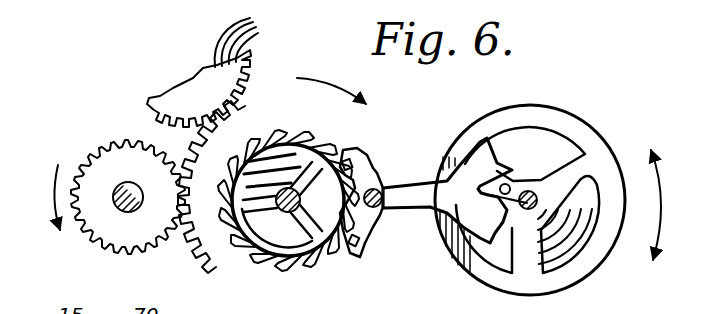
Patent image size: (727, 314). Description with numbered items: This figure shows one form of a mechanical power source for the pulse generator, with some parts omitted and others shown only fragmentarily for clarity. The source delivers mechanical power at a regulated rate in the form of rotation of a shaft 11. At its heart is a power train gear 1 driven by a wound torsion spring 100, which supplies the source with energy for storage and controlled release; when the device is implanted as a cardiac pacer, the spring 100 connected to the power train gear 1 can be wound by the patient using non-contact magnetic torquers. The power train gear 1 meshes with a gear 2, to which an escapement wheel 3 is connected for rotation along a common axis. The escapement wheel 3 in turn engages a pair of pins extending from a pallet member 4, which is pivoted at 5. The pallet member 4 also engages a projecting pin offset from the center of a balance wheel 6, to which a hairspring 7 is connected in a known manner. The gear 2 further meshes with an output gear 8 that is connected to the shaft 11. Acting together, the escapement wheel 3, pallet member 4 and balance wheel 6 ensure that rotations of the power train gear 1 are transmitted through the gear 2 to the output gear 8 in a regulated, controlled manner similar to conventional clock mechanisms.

The power train gear 1 is at (197, 79).
The wound torsion spring 100 is at (250, 24).
The gear 2 is at (282, 112).
The escapement wheel 3 is at (312, 265).
The pallet member 4 is at (417, 204).
The pivot 5 is at (384, 187).
The balance wheel 6 is at (573, 128).
The hairspring 7 is at (567, 250).
The output gear 8 is at (100, 240).
The shaft 11 is at (119, 182).